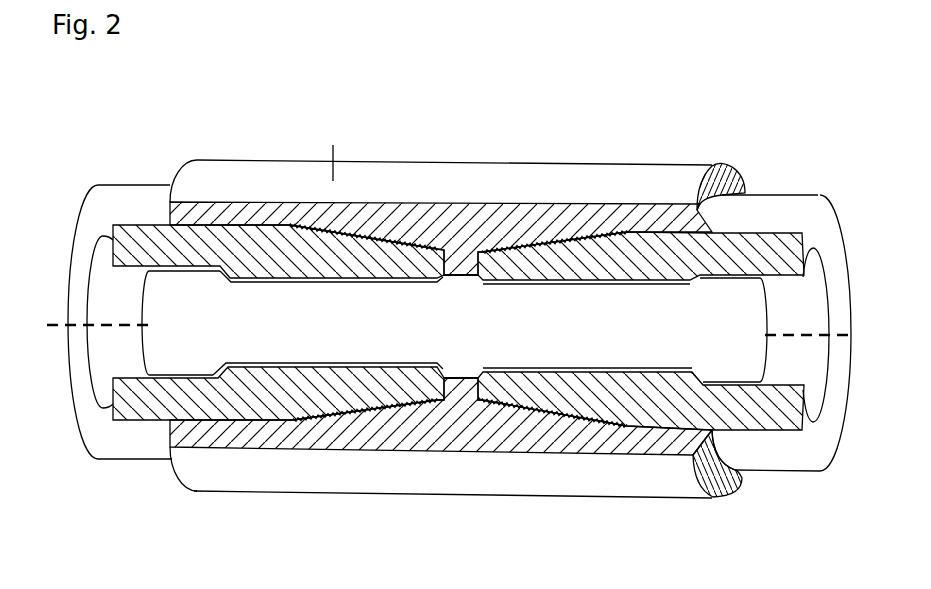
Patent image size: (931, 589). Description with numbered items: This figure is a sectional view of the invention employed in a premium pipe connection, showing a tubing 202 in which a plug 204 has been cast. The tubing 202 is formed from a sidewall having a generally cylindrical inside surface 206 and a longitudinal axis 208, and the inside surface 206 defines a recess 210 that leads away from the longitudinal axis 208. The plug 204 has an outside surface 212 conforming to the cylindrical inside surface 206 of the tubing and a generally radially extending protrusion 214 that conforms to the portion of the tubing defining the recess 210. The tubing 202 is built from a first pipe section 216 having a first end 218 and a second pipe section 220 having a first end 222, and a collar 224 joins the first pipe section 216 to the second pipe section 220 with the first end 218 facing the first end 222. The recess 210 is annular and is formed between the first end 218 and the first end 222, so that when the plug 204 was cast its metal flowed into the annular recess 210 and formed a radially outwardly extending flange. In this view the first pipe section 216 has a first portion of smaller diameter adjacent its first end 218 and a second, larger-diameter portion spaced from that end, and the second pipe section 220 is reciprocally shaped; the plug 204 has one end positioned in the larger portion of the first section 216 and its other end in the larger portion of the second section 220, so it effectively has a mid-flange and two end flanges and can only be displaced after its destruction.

The tubing 202 is at (448, 161).
The plug 204 is at (604, 345).
The inside surface 206 is at (829, 335).
The longitudinal axis 208 is at (62, 323).
The recess 210 is at (450, 368).
The outside surface 212 is at (542, 410).
The radially extending protrusion 214 is at (463, 372).
The first pipe section 216 is at (712, 430).
The first end of first pipe section 218 is at (467, 288).
The second pipe section 220 is at (173, 420).
The first end of second pipe section 222 is at (437, 268).
The collar 224 is at (320, 140).